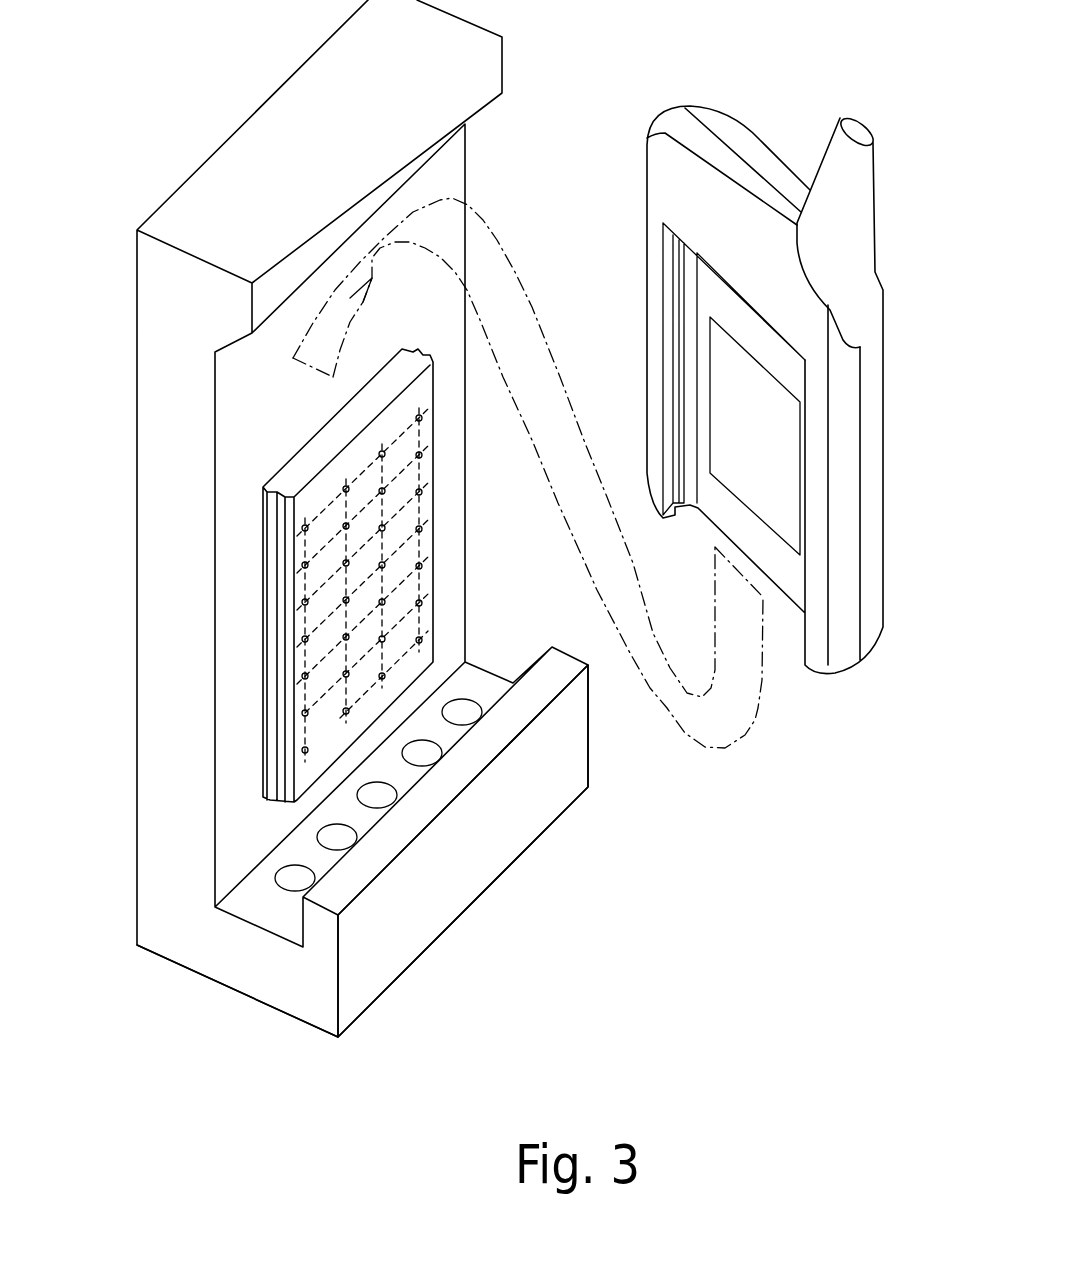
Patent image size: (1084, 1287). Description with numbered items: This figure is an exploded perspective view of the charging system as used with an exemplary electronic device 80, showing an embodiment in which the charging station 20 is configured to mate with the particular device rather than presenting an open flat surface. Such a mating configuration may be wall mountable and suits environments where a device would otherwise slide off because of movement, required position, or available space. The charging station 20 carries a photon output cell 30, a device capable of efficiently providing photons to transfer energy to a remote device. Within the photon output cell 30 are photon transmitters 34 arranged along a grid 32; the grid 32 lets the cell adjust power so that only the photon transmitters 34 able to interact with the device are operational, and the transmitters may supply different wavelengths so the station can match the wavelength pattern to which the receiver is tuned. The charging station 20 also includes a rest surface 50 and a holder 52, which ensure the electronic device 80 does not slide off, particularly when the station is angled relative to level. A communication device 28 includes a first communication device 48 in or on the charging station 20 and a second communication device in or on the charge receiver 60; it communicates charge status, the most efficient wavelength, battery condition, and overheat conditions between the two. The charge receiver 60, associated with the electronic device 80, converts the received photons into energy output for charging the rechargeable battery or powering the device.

The charging station 20 is at (230, 452).
The communication device 28 is at (293, 887).
The photon output cell 30 is at (320, 532).
The grid 32 is at (397, 437).
The photon transmitters 34 is at (420, 418).
The first communication device 48 is at (387, 792).
The rest surface 50 is at (290, 992).
The holder 52 is at (533, 808).
The charge receiver 60 is at (790, 518).
The electronic device 80 is at (848, 490).